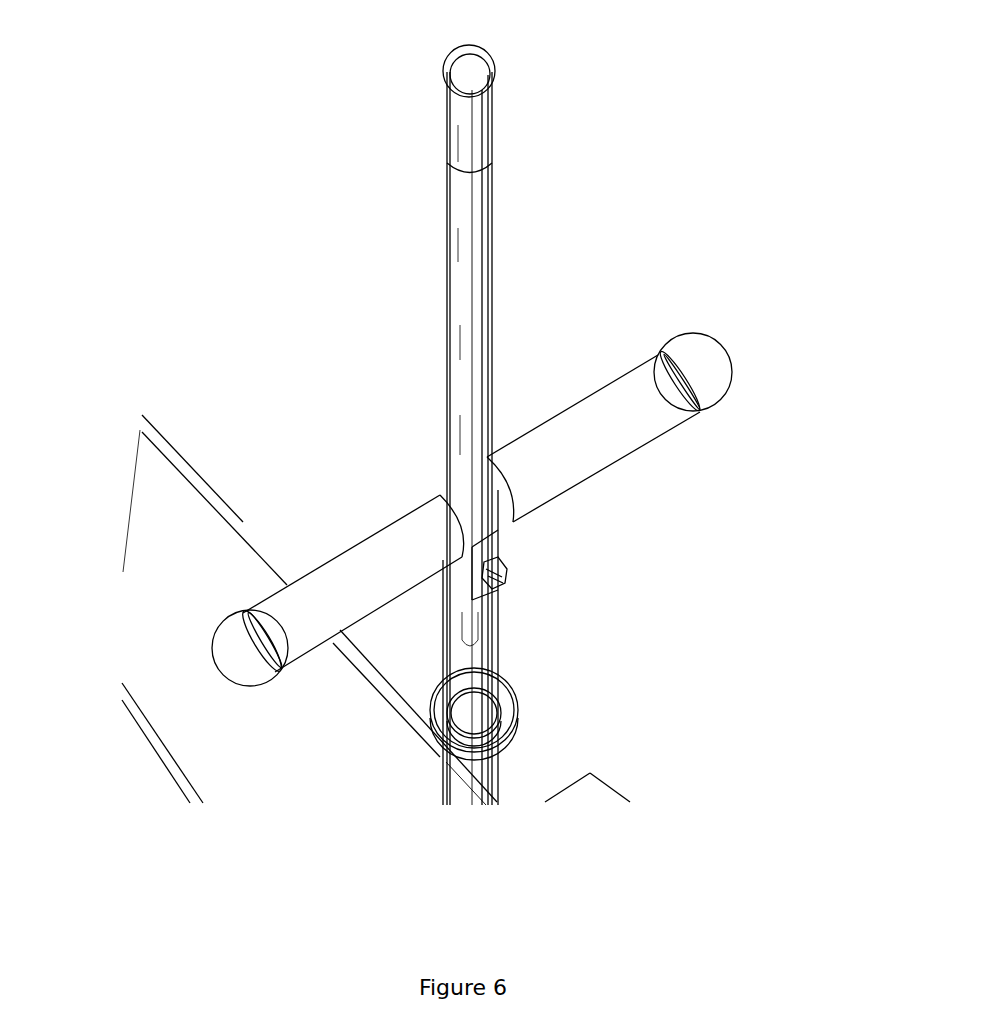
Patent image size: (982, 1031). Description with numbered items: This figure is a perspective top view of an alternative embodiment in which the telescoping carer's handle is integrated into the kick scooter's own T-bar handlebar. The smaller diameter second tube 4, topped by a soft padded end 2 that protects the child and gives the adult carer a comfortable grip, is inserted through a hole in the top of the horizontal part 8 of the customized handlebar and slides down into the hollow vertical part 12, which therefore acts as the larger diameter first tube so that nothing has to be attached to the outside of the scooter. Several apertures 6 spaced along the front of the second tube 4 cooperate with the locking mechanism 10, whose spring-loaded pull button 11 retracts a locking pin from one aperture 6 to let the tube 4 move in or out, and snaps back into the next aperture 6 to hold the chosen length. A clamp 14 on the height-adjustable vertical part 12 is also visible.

The padded end 2 is at (437, 62).
The second tube 4 is at (446, 279).
The apertures 6 is at (488, 457).
The horizontal part 8 is at (213, 617).
The locking mechanism 10 is at (507, 552).
The button 11 is at (507, 575).
The vertical part 12 is at (505, 633).
The clamp 14 is at (518, 707).